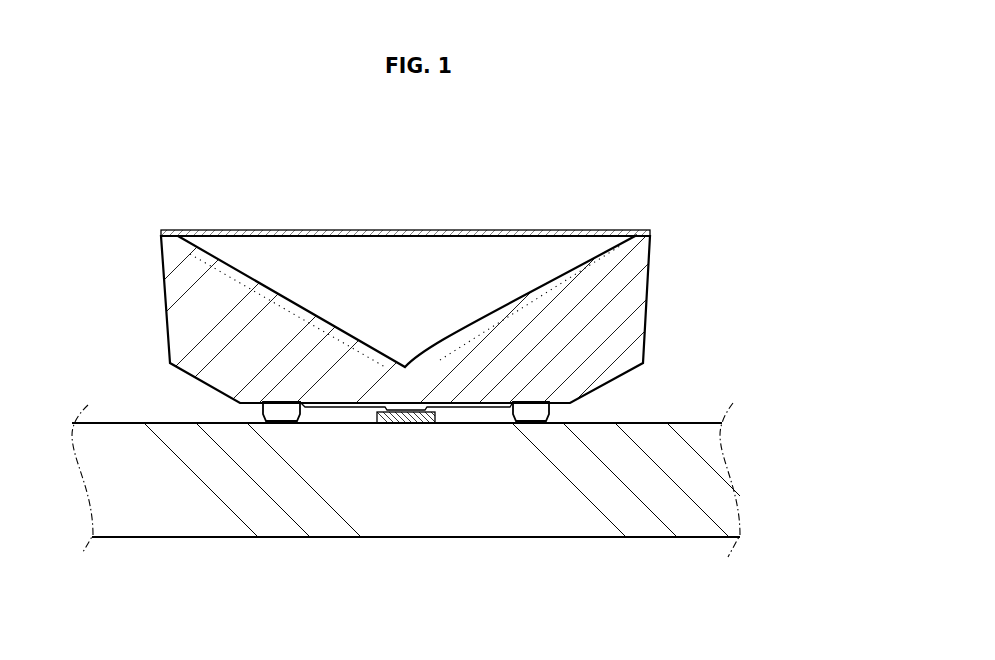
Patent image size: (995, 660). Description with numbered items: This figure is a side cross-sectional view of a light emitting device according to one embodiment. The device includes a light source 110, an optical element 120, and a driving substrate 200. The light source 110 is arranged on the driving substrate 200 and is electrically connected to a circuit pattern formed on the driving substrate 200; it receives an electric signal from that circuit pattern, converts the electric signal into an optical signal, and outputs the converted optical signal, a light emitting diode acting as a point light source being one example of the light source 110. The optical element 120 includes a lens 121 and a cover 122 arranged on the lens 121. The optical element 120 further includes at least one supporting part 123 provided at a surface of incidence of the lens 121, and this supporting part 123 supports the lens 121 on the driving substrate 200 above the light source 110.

The optical element 120 is at (390, 276).
The lens 121 is at (650, 272).
The cover 122 is at (652, 232).
The supporting part 123 is at (550, 413).
The light source 110 is at (402, 428).
The driving substrate 200 is at (560, 502).